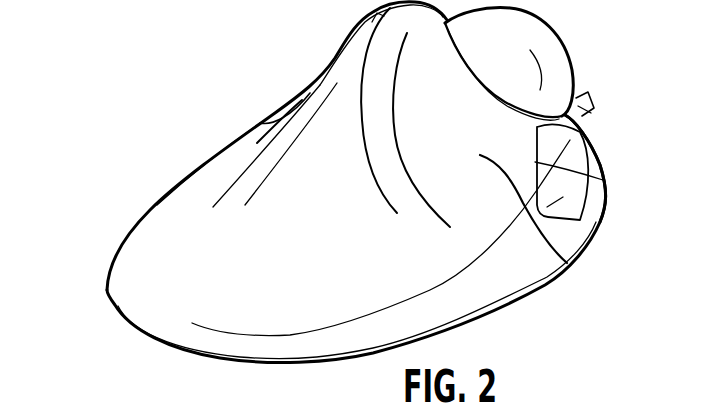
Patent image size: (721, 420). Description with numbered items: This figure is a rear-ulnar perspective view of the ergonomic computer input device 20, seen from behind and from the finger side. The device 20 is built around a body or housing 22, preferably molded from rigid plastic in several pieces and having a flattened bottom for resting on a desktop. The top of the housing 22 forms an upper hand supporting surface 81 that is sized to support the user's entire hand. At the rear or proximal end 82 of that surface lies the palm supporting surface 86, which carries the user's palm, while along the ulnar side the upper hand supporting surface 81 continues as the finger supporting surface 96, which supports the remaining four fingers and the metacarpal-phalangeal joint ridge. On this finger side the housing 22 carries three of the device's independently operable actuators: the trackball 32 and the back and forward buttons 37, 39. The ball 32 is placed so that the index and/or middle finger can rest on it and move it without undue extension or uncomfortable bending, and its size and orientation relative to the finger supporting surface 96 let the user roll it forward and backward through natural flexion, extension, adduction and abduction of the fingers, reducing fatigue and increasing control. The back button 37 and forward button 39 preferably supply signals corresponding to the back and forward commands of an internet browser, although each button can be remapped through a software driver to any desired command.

The ergonomic computer input device 20 is at (170, 114).
The housing 22 is at (340, 73).
The trackball 32 is at (552, 48).
The back button 37 is at (590, 150).
The forward button 39 is at (590, 200).
The upper hand supporting surface 81 is at (447, 138).
The proximal end 82 is at (124, 294).
The palm supporting surface 86 is at (183, 297).
The finger supporting surface 96 is at (562, 255).